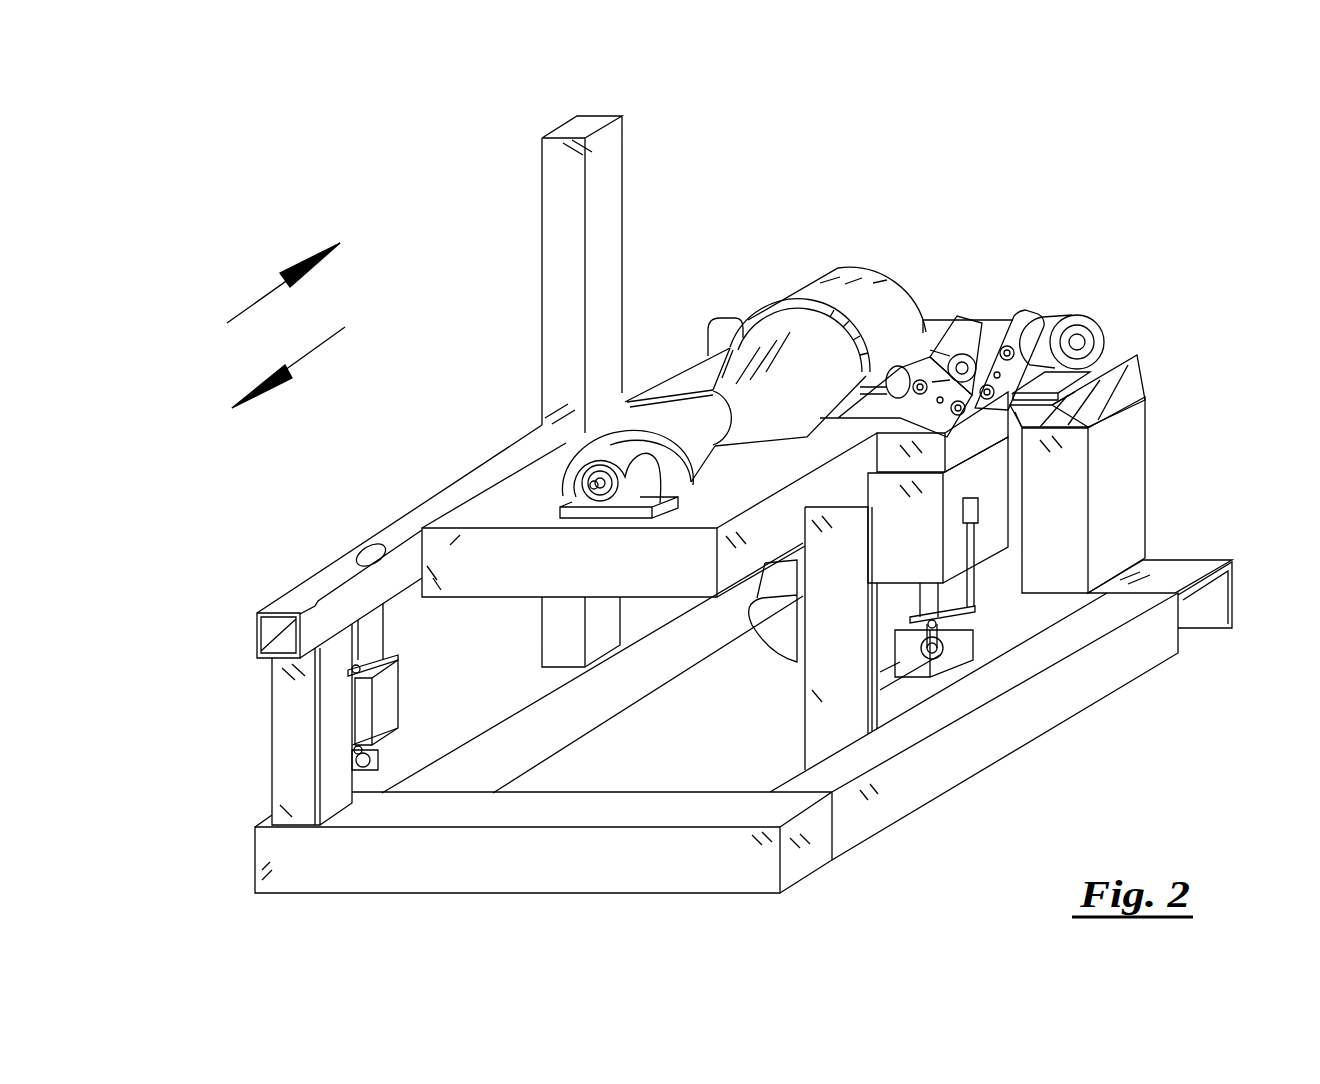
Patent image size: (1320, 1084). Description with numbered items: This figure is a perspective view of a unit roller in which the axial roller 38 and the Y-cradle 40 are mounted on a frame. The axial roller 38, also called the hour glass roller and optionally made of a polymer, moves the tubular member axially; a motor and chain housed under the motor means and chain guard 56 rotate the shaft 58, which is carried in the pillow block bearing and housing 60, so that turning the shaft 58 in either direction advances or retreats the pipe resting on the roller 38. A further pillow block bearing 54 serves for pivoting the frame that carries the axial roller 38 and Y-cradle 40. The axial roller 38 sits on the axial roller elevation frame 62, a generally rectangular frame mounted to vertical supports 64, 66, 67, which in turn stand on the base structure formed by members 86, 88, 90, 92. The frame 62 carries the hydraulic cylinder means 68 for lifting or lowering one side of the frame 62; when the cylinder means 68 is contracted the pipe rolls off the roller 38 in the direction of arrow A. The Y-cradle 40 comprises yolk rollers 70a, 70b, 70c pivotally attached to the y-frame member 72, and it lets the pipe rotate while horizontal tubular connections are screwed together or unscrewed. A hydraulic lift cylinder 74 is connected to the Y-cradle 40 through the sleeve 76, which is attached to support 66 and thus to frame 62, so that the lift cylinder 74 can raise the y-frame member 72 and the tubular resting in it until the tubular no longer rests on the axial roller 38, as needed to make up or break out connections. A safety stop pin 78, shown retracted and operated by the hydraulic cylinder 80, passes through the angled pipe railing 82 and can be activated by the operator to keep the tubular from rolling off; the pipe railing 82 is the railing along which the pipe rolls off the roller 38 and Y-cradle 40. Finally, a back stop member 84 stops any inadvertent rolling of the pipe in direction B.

The axial roller 38 is at (772, 338).
The Y-cradle 40 is at (1005, 345).
The pillow block bearing 54 is at (1092, 322).
The motor means and chain guard 56 is at (852, 284).
The shaft 58 is at (487, 537).
The pillow block bearing and housing 60 is at (600, 483).
The axial roller elevation frame 62 is at (467, 525).
The vertical support 64 is at (1122, 470).
The vertical support 66 is at (878, 678).
The vertical support 67 is at (293, 733).
The hydraulic cylinder means 68 is at (793, 632).
The yolk roller 70a is at (1020, 332).
The yolk roller 70b is at (942, 338).
The yolk roller 70c is at (900, 385).
The y-frame member 72 is at (1078, 343).
The hydraulic lift cylinder 74 is at (960, 597).
The sleeve 76 is at (992, 508).
The safety stop pin 78 is at (382, 631).
The hydraulic cylinder 80 is at (380, 712).
The pipe railing 82 is at (318, 585).
The back stop member 84 is at (563, 197).
The base structure member 86 is at (1177, 572).
The base structure member 88 is at (883, 795).
The base structure member 90 is at (455, 858).
The base structure member 92 is at (542, 728).
The direction arrow A is at (327, 337).
The direction B is at (270, 293).